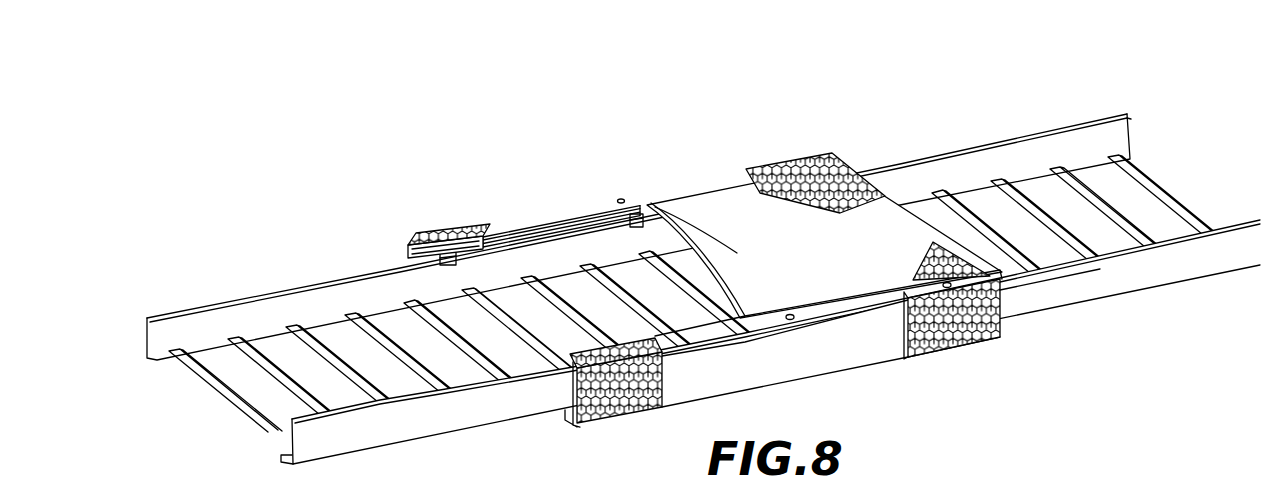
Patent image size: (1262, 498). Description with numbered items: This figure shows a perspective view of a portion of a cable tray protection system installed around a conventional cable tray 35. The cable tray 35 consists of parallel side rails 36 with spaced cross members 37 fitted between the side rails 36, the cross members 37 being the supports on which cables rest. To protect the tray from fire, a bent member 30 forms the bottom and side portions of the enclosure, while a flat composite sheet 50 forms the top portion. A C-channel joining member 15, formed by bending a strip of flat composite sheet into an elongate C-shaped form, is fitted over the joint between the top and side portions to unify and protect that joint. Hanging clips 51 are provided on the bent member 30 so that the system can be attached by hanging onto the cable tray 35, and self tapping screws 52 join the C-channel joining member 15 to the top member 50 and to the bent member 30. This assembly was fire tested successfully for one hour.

The C-channel joining member 15 is at (557, 207).
The bent member 30 is at (905, 358).
The cable tray 35 is at (1105, 298).
The side rails 36 is at (1126, 134).
The cross members 37 is at (1120, 213).
The flat composite sheet 50 is at (856, 207).
The hanging clips 51 is at (444, 257).
The self tapping screws 52 is at (788, 313).